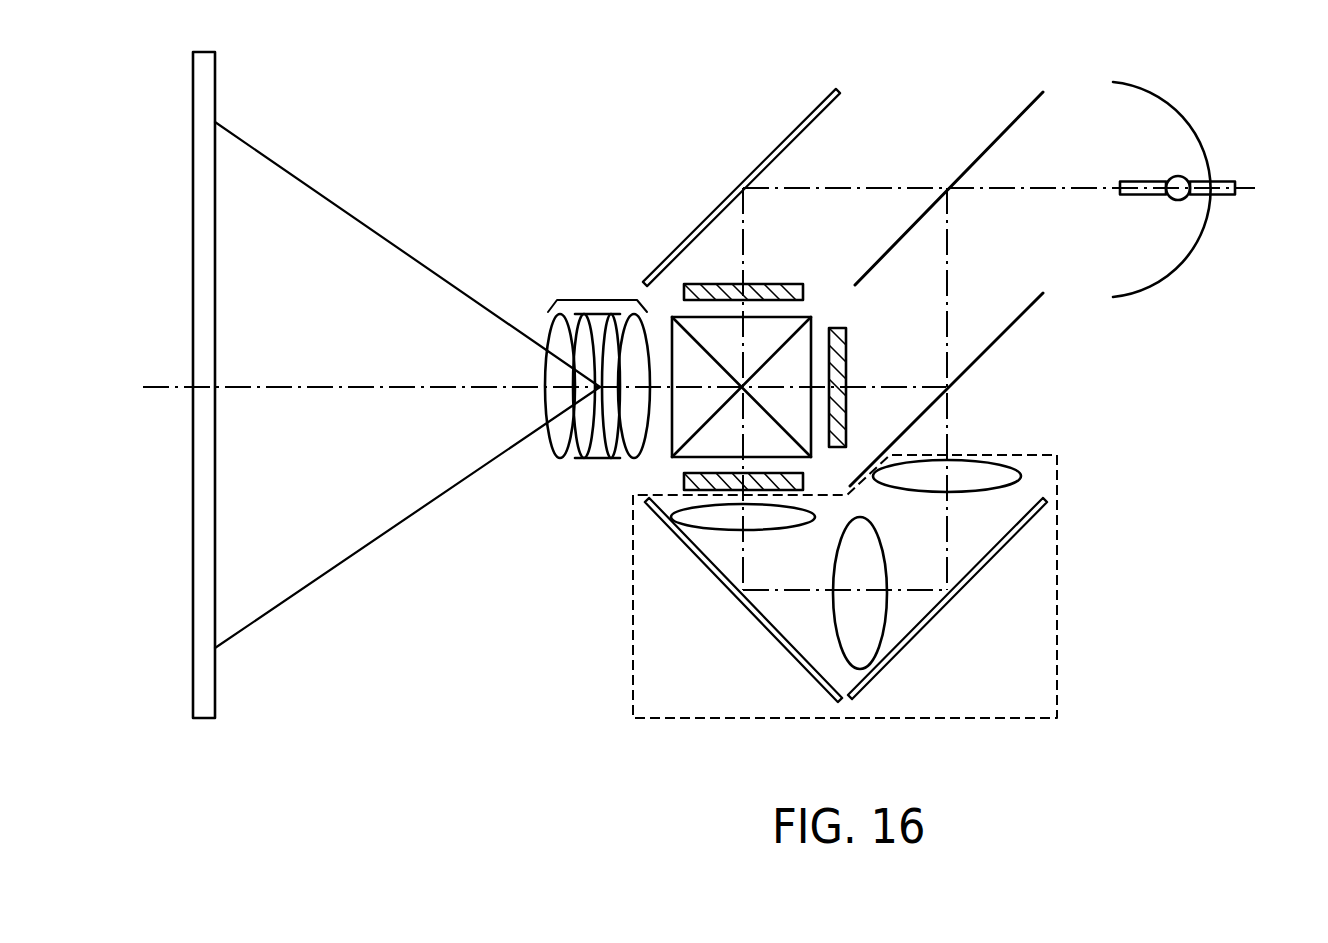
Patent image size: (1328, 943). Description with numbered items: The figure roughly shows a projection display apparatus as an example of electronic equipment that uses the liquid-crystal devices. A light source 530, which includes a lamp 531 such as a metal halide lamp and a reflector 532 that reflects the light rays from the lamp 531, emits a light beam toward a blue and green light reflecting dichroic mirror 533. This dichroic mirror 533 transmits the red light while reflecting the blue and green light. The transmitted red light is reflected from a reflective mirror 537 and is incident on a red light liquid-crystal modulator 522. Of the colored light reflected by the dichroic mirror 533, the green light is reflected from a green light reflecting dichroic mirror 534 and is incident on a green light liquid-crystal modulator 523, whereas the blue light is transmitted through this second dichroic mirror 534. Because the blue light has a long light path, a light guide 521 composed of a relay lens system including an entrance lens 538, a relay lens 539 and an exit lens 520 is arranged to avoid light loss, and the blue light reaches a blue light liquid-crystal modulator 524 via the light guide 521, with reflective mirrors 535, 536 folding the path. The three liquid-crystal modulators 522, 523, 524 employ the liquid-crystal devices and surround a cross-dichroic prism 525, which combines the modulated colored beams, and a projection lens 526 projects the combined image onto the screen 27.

The screen 27 is at (216, 672).
The exit lens 520 is at (750, 530).
The light guide 521 is at (1062, 640).
The red light liquid-crystal modulator 522 is at (767, 284).
The green light liquid-crystal modulator 523 is at (846, 352).
The blue light liquid-crystal modulator 524 is at (683, 480).
The cross-dichroic prism 525 is at (672, 457).
The projection lens 526 is at (585, 298).
The light source 530 is at (1198, 182).
The lamp 531 is at (1172, 178).
The reflector 532 is at (1190, 235).
The blue and green light reflecting dichroic mirror 533 is at (1020, 113).
The green light reflecting dichroic mirror 534 is at (1022, 312).
The reflective mirror 535 is at (1025, 525).
The reflective mirror 536 is at (787, 650).
The reflective mirror 537 is at (750, 167).
The entrance lens 538 is at (990, 470).
The relay lens 539 is at (875, 615).